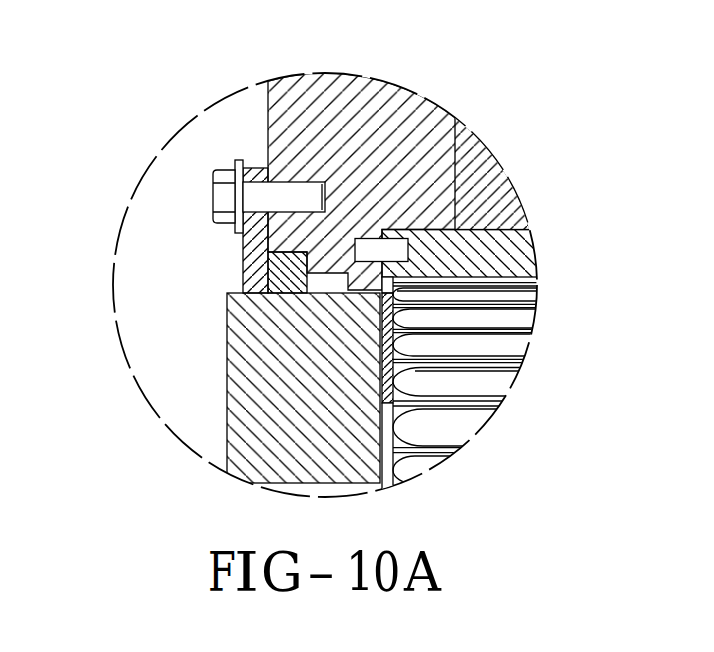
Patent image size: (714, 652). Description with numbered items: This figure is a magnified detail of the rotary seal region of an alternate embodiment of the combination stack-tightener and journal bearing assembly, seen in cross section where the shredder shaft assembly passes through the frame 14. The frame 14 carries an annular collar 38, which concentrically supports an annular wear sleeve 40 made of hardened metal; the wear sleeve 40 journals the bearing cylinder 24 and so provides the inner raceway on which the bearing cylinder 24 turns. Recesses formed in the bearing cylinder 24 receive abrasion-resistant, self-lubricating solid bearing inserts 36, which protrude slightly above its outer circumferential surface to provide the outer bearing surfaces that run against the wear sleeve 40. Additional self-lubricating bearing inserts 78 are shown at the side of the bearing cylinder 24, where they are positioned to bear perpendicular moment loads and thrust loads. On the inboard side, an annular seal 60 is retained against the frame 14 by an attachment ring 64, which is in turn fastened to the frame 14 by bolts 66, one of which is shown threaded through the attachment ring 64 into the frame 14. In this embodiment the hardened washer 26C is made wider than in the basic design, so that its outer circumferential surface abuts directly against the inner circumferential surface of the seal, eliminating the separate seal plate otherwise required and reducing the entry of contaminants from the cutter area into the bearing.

The frame 14 is at (267, 117).
The annular collar 38 is at (480, 177).
The annular wear sleeve 40 is at (510, 257).
The annular seal 60 is at (282, 273).
The attachment ring 64 is at (250, 250).
The bolts 66 is at (220, 194).
The hardened washer 26C is at (287, 470).
The bearing inserts 78 is at (385, 395).
The bearing cylinder 24 is at (400, 405).
The solid bearing insert 36 is at (525, 317).